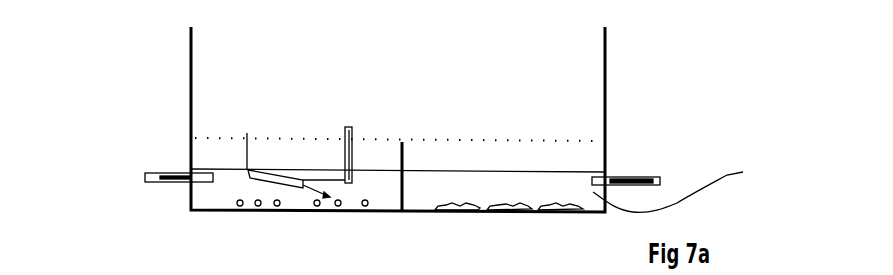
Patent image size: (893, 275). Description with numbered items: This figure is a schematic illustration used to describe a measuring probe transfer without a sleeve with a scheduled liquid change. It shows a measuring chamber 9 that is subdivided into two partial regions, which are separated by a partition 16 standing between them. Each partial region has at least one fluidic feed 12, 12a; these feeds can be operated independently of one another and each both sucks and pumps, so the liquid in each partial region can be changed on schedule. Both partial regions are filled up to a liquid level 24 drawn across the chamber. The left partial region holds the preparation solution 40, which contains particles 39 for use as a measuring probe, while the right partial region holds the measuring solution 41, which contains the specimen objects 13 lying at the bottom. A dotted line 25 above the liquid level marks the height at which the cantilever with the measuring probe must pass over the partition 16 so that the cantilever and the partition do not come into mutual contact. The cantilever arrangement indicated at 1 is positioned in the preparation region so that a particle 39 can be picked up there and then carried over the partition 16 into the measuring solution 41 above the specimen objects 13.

The cleaning device 1 is at (292, 148).
The measuring chamber 9 is at (572, 68).
The fluidic feed 12 is at (147, 175).
The fluidic feed 12a is at (660, 178).
The specimen objects 13 is at (605, 213).
The partition 16 is at (403, 145).
The liquid level 24 is at (605, 172).
The line 25 is at (605, 167).
The particles 39 is at (277, 206).
The preparation solution 40 is at (203, 200).
The measuring solution 41 is at (686, 180).